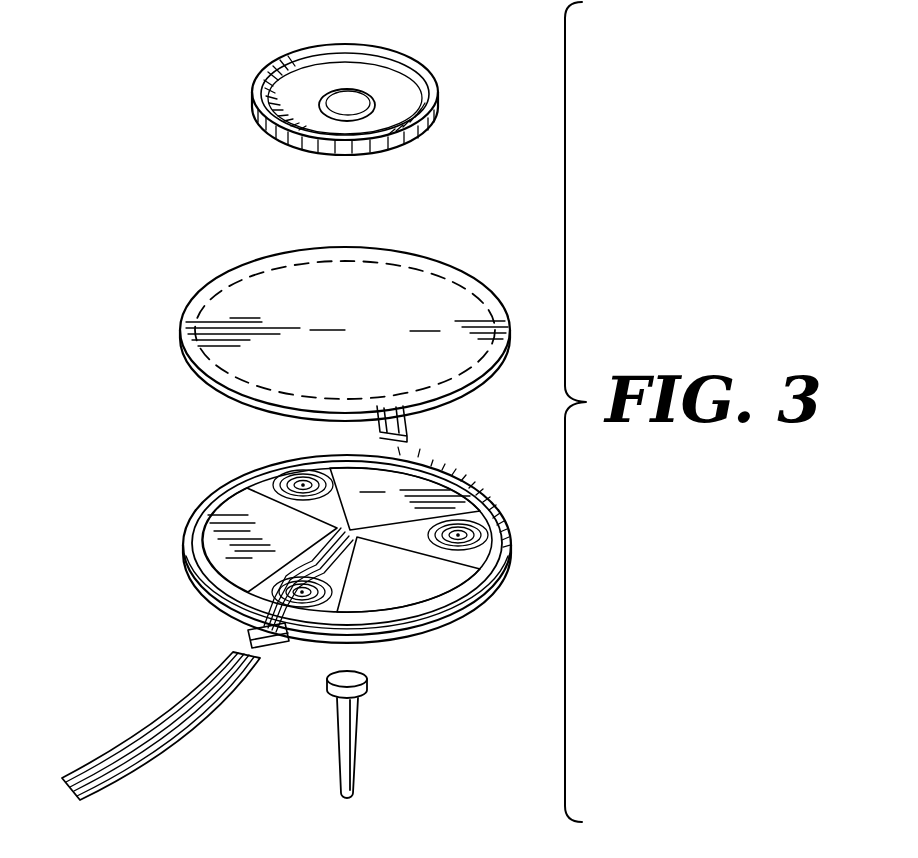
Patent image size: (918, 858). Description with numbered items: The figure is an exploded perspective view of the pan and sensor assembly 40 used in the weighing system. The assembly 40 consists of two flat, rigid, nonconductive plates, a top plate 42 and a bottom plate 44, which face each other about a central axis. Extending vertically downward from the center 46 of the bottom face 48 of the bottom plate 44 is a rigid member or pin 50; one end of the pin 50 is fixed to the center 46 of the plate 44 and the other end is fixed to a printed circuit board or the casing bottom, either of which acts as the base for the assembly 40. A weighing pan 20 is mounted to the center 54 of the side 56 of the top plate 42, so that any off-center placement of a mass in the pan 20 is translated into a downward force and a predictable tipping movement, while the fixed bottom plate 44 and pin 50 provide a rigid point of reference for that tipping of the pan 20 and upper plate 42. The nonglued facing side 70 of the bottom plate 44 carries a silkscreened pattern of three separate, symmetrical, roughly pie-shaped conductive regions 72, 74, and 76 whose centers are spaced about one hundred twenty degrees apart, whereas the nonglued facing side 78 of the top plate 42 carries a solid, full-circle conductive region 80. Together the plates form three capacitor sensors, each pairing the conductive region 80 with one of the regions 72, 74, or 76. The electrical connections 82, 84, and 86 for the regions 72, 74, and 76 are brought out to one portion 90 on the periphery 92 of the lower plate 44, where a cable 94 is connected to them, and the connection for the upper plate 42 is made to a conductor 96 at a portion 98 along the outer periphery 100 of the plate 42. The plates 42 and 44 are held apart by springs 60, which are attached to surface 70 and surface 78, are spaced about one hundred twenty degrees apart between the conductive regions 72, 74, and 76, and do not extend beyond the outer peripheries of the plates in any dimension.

The weighing pan 20 is at (450, 102).
The pan and sensor assembly 40 is at (348, 318).
The top plate 42 is at (188, 287).
The bottom plate 44 is at (310, 612).
The center of the bottom face 46 is at (358, 648).
The bottom face 48 is at (490, 608).
The rigid member or pin 50 is at (350, 720).
The center of side 56 54 is at (350, 311).
The side of plate 42 56 is at (402, 283).
The springs 60 is at (300, 468).
The nonglued facing side 70 is at (480, 508).
The conductive region 72 is at (413, 584).
The conductive region 74 is at (243, 508).
The conductive region 76 is at (440, 500).
The nonglued facing side 78 is at (240, 408).
The conductive region 80 is at (465, 287).
The electrical connection 82 is at (276, 641).
The electrical connection 84 is at (247, 607).
The electrical connection 86 is at (250, 632).
The portion of the periphery 90 is at (264, 653).
The periphery of the lower capacitor plate 92 is at (508, 525).
The cable 94 is at (195, 722).
The conductor 96 is at (418, 452).
The portion 98 is at (377, 424).
The outer periphery of plate 42 100 is at (508, 308).